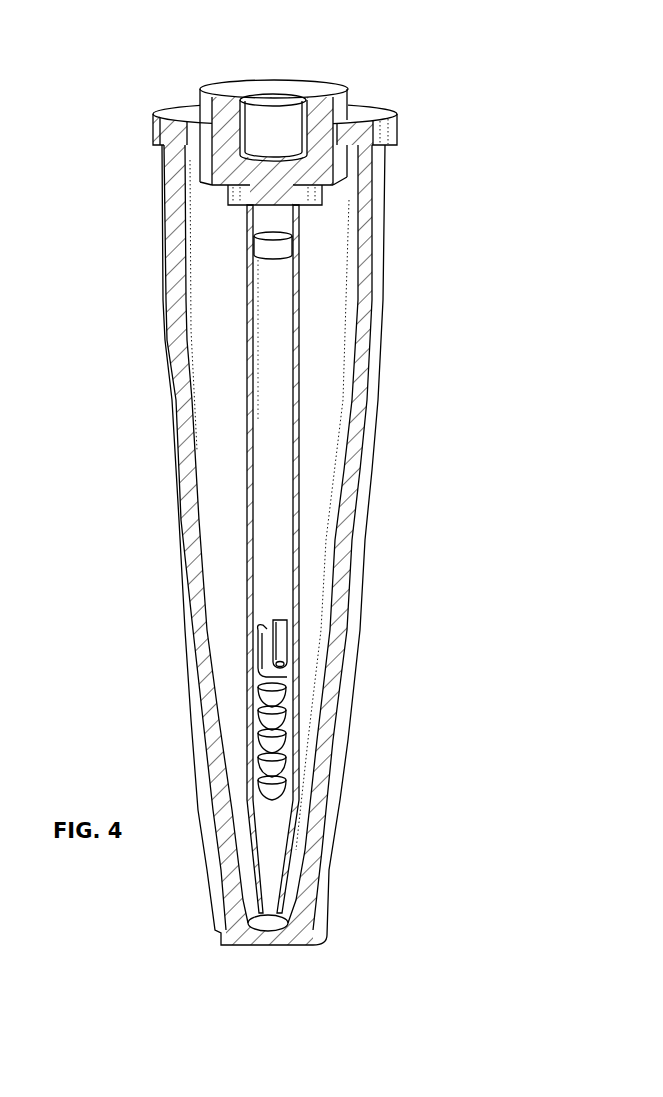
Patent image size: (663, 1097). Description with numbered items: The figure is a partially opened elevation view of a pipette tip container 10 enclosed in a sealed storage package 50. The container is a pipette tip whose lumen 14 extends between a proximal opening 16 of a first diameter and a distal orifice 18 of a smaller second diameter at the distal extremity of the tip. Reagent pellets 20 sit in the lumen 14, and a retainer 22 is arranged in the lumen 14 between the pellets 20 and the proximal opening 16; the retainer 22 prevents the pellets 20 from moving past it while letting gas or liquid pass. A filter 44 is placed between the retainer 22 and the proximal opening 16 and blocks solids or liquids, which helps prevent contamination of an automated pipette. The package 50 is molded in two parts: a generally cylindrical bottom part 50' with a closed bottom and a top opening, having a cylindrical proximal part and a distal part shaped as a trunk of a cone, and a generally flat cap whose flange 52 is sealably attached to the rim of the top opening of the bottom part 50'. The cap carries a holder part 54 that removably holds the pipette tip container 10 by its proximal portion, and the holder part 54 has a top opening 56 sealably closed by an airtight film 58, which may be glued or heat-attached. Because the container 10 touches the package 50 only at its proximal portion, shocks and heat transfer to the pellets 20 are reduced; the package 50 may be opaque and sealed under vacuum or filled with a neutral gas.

The pipette tip container 10 is at (300, 580).
The lumen 14 is at (283, 415).
The proximal opening 16 is at (300, 127).
The distal orifice 18 is at (273, 930).
The pellet 20 is at (305, 738).
The retainer 22 is at (292, 673).
The filter 44 is at (293, 243).
The sealed storage package 50 is at (206, 545).
The bottom part 50' is at (381, 537).
The flange 52 is at (393, 132).
The holder part 54 is at (198, 102).
The top opening 56 is at (246, 100).
The airtight film 58 is at (305, 88).